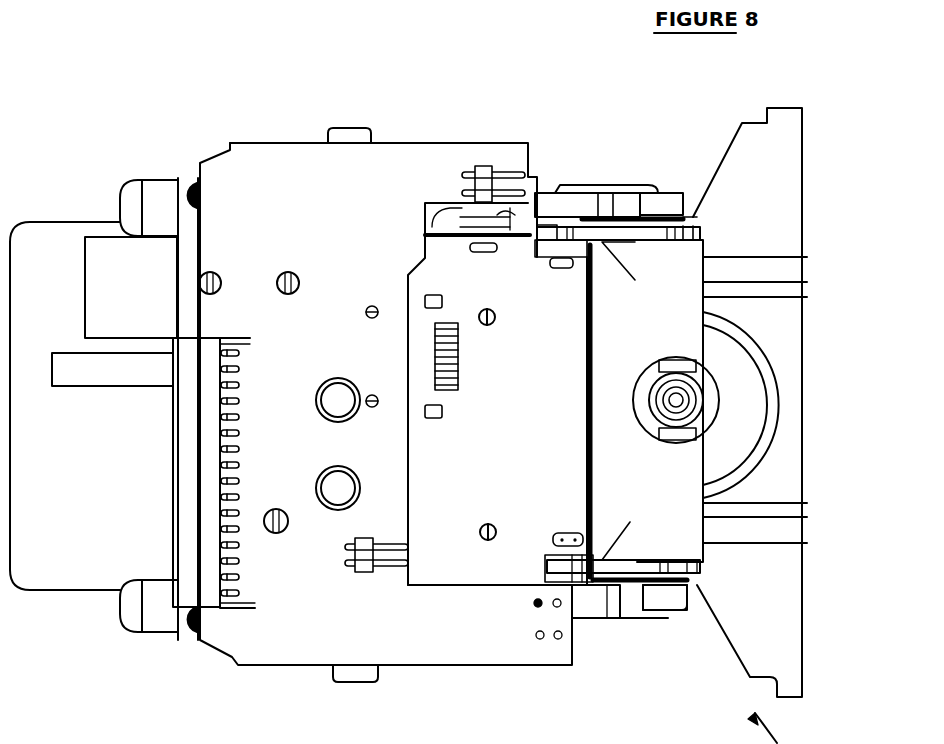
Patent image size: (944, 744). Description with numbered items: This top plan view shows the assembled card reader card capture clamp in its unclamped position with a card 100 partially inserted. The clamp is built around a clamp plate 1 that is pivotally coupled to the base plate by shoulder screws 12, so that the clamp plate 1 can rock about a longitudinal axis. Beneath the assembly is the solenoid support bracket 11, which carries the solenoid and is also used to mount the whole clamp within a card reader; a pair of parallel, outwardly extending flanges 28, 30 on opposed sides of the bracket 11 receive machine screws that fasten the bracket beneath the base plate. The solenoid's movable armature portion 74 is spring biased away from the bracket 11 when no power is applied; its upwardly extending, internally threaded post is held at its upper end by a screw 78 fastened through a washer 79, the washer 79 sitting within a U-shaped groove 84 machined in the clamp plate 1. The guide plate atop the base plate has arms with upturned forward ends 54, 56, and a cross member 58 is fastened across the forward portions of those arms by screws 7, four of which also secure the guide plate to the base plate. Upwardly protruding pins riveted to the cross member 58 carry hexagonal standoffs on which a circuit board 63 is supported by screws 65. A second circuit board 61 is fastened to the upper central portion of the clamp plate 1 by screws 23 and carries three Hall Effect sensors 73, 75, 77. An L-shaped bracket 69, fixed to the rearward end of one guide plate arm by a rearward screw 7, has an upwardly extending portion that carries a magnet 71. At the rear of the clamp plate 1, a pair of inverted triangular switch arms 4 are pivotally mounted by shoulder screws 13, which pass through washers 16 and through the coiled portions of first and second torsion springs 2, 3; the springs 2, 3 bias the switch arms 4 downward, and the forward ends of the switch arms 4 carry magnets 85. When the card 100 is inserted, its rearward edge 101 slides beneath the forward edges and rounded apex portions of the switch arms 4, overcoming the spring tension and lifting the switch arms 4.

The clamp plate 1 is at (698, 503).
The first torsion spring 2 is at (628, 590).
The second torsion spring 3 is at (578, 213).
The switch arms 4 is at (617, 242).
The screws 7 is at (190, 183).
The solenoid support bracket 11 is at (733, 657).
The shoulder screws 12 is at (362, 128).
The shoulder screws 13 is at (672, 205).
The washers 16 is at (692, 218).
The screws 23 is at (486, 325).
The flange 28 is at (640, 608).
The flange 30 is at (632, 200).
The upturned forward end 54 is at (122, 610).
The upturned forward end 56 is at (120, 195).
The cross member 58 is at (196, 265).
The circuit board 61 is at (544, 440).
The circuit board 63 is at (360, 233).
The screws 65 is at (222, 292).
The L-shaped bracket 69 is at (430, 237).
The magnet 71 is at (512, 238).
The Hall Effect sensor 73 is at (560, 530).
The movable armature portion 74 is at (745, 380).
The Hall Effect sensor 75 is at (585, 268).
The Hall Effect sensor 77 is at (481, 252).
The screw 78 is at (660, 358).
The washer 79 is at (672, 398).
The U-shaped groove 84 is at (657, 432).
The magnets 85 is at (562, 268).
The card 100 is at (90, 532).
The rearward edge 101 is at (608, 258).